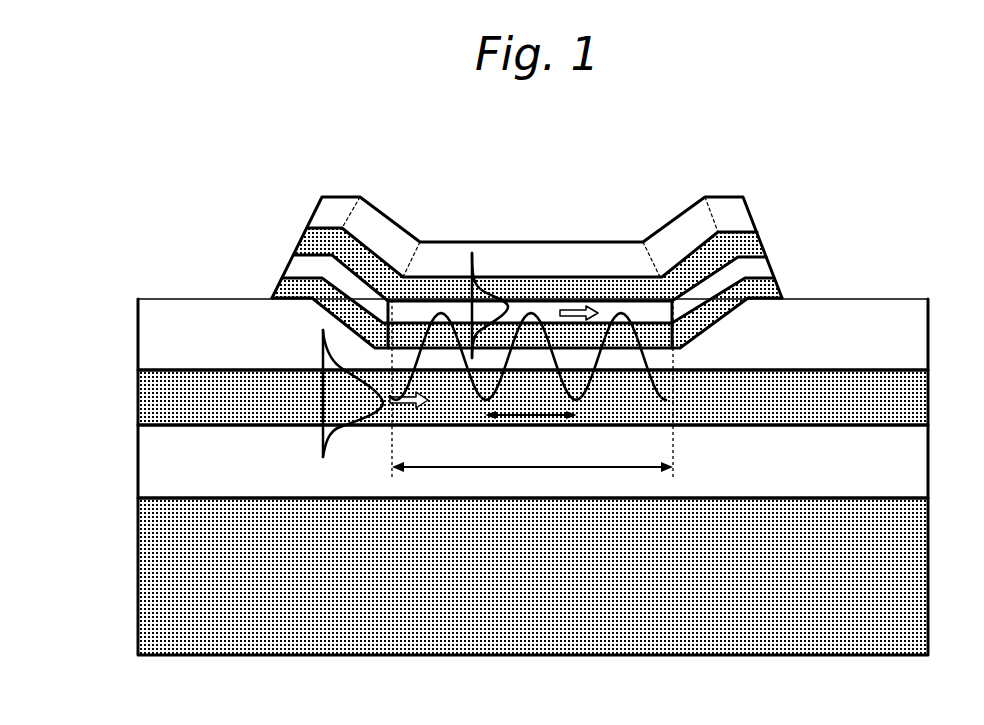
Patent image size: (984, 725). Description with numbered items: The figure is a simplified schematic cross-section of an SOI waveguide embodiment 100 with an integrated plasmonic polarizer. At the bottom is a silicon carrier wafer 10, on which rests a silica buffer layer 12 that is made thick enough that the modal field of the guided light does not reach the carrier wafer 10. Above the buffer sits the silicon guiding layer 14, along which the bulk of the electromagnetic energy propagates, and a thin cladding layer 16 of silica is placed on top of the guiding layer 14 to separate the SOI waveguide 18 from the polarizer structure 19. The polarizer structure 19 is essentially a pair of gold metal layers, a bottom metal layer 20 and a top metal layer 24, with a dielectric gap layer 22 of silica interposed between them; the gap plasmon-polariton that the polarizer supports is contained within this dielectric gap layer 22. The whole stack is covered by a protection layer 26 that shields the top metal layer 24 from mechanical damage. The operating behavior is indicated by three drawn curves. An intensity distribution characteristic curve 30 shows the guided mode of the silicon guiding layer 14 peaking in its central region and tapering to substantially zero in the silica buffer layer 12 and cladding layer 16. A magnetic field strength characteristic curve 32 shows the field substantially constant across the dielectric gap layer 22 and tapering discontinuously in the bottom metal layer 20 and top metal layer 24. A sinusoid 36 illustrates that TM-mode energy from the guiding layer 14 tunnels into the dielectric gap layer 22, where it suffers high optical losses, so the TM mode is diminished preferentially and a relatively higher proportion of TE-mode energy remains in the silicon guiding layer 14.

The SOI waveguide embodiment 100 is at (498, 709).
The SOI waveguide 18 is at (130, 278).
The silicon carrier wafer 10 is at (157, 573).
The silica buffer layer 12 is at (150, 479).
The silicon guiding layer 14 is at (147, 404).
The cladding layer 16 is at (146, 344).
The polarizer structure 19 is at (556, 212).
The bottom metal layer 20 is at (772, 289).
The dielectric gap layer 22 is at (760, 261).
The top metal layer 24 is at (762, 232).
The protection layer 26 is at (728, 203).
The intensity distribution characteristic curve 30 is at (338, 433).
The magnetic field strength characteristic curve 32 is at (497, 291).
The sinusoid 36 is at (642, 322).